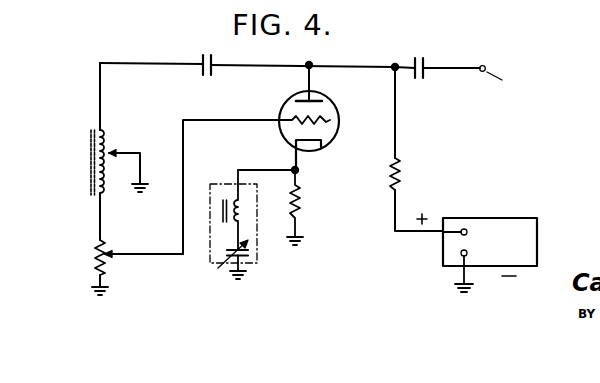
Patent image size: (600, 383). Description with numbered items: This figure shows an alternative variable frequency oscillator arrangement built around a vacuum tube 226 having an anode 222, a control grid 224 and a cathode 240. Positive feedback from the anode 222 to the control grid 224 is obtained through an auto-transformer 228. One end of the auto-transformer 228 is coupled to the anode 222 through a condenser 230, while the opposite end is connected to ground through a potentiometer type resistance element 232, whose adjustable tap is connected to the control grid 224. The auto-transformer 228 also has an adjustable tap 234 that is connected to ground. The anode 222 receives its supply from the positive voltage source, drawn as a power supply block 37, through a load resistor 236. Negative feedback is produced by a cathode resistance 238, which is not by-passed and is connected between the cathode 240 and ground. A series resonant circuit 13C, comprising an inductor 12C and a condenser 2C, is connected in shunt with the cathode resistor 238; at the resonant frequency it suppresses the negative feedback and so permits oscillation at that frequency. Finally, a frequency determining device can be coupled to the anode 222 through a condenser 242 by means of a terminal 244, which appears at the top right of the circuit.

The condenser 230 is at (204, 57).
The condenser 242 is at (421, 58).
The terminal 244 is at (510, 83).
The auto-transformer 228 is at (98, 141).
The adjustable tap 234 is at (112, 151).
The potentiometer type resistance element 232 is at (96, 259).
The vacuum tube 226 is at (282, 108).
The anode 222 is at (323, 101).
The control grid 224 is at (328, 121).
The cathode 240 is at (322, 148).
The cathode resistance 238 is at (303, 201).
The series resonant circuit 13C is at (258, 255).
The inductor 12C is at (222, 203).
The condenser 2C is at (232, 251).
The load resistor 236 is at (401, 170).
The power supply 37 is at (540, 239).